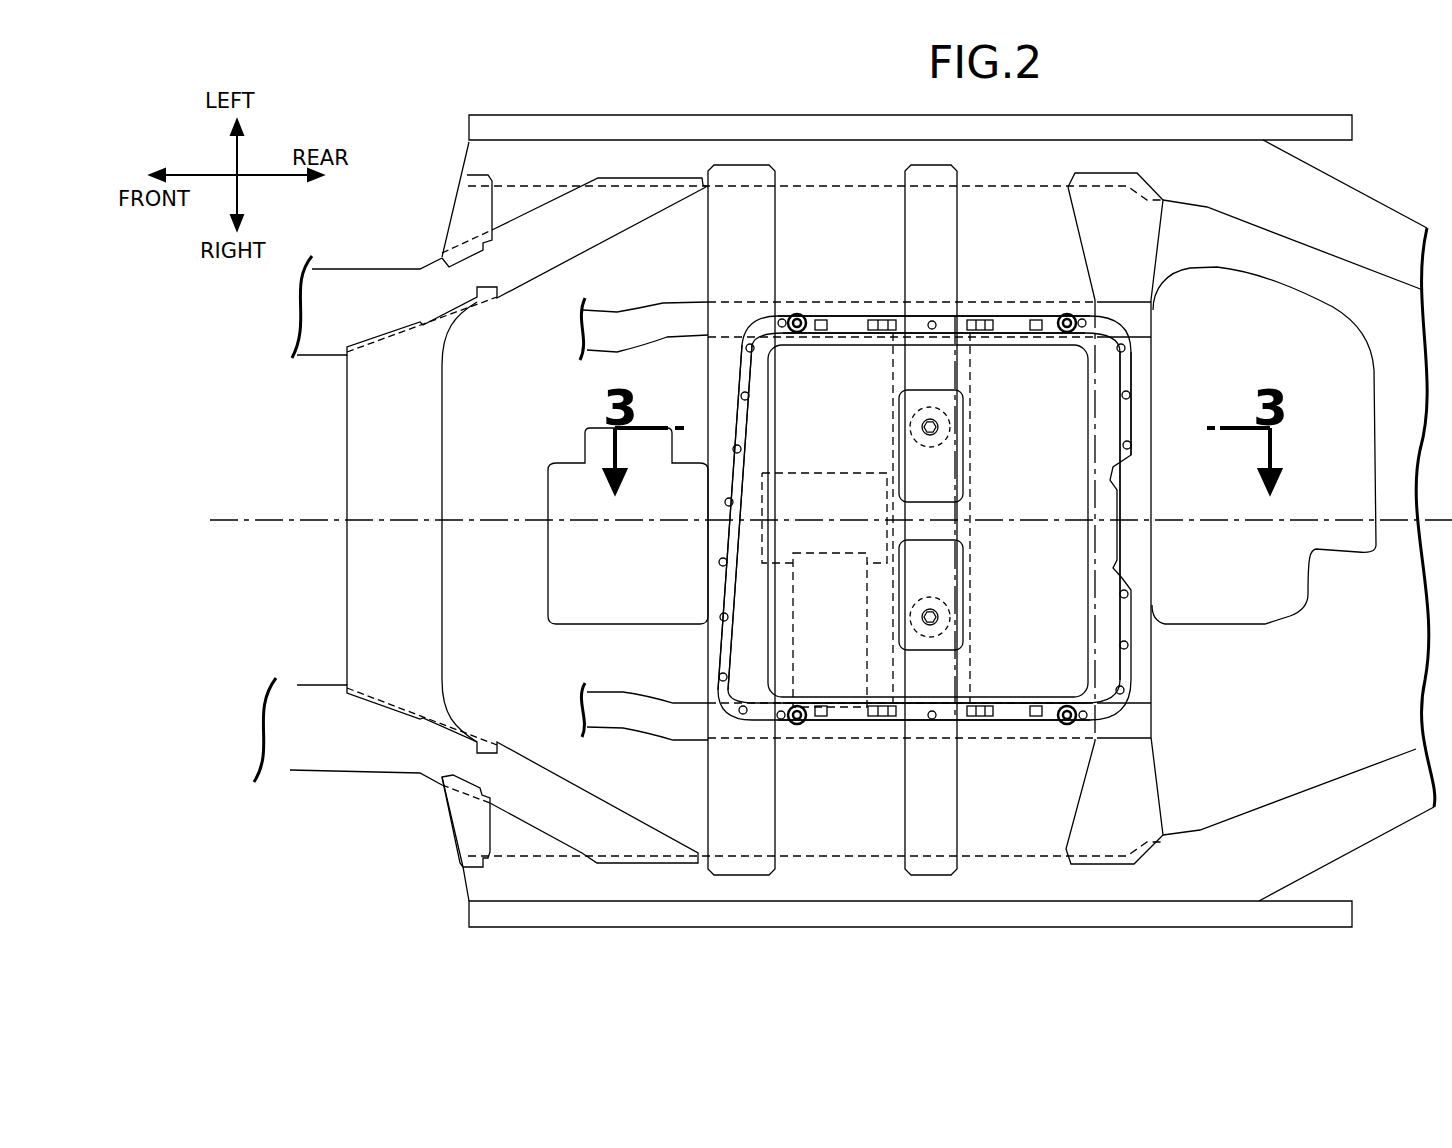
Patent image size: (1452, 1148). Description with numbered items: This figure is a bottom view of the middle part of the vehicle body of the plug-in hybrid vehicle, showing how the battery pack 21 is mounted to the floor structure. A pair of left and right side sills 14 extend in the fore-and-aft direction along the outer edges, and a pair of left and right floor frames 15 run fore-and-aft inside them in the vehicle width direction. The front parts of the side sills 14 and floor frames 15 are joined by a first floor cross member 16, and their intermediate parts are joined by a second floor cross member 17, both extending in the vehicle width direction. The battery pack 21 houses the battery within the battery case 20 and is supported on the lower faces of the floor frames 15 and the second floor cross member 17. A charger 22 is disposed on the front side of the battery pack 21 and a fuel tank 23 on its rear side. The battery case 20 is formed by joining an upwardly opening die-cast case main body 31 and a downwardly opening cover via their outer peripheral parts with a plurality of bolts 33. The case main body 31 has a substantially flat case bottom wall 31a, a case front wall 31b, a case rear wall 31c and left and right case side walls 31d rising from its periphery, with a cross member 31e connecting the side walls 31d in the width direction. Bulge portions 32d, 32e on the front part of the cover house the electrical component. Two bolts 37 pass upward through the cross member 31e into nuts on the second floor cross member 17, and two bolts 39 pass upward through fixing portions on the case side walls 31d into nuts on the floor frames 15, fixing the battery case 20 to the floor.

The side sill 14 is at (858, 160).
The floor frame 15 is at (1000, 302).
The first floor cross member 16 is at (715, 252).
The second floor cross member 17 is at (920, 223).
The battery case 20 is at (728, 414).
The battery pack 21 is at (888, 748).
The charger 22 is at (570, 575).
The fuel tank 23 is at (1283, 598).
The case main body 31 is at (1072, 415).
The case bottom wall 31a is at (1058, 512).
The case front wall 31b is at (722, 597).
The case rear wall 31c is at (1128, 438).
The case side wall 31d is at (852, 330).
The cross member 31e is at (972, 373).
The bulge portion 32d is at (795, 632).
The bulge portion 32e is at (840, 470).
The bolt 33 is at (748, 345).
The bolt 37 is at (940, 427).
The bolt 39 is at (798, 314).